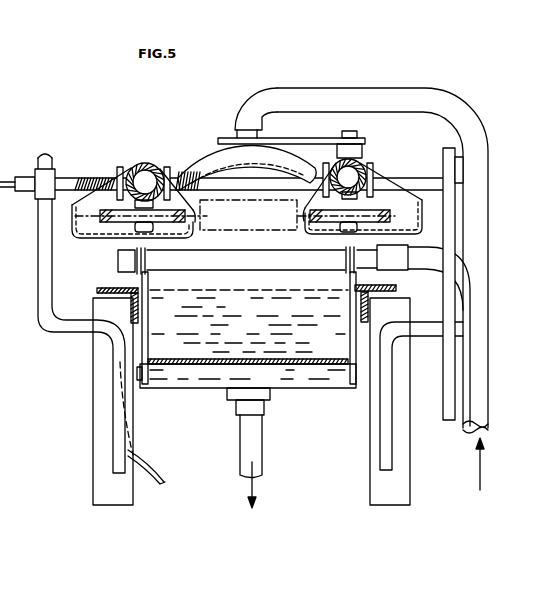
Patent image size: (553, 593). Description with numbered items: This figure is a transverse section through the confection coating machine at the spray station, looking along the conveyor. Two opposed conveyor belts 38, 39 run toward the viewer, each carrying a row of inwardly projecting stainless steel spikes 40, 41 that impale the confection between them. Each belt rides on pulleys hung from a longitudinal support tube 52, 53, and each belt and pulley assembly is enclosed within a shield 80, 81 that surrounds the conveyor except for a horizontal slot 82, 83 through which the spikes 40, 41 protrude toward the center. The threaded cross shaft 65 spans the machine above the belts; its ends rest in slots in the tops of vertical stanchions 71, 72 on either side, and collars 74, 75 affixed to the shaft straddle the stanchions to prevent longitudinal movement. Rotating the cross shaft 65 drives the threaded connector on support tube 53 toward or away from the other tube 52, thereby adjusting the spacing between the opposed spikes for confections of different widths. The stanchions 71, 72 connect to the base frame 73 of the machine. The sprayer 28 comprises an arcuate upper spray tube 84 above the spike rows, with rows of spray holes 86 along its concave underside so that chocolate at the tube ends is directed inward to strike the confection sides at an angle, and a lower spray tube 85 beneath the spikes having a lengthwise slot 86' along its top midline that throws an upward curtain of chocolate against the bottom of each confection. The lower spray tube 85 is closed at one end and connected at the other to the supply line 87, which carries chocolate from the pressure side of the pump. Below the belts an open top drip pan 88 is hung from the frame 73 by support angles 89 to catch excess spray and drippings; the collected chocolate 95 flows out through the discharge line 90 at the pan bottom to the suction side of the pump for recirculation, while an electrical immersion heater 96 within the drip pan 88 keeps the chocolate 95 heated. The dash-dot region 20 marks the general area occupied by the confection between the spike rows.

The dash-dot reference frame 20 is at (233, 224).
The sprayer 28 is at (313, 152).
The belt 38 is at (390, 216).
The belt 39 is at (103, 217).
The spikes 40 is at (297, 216).
The spikes 41 is at (205, 217).
The support tube 52 is at (357, 196).
The support tube 53 is at (134, 203).
The cross shaft 65 is at (72, 180).
The stanchion 71 is at (43, 223).
The stanchion 72 is at (452, 213).
The base frame 73 is at (100, 370).
The collar 74 is at (450, 150).
The collar 75 is at (48, 156).
The shield 80 is at (370, 166).
The shield 81 is at (115, 177).
The horizontal slot 82 is at (304, 221).
The horizontal slot 83 is at (195, 223).
The upper spray tube 84 is at (212, 157).
The lower spray tube 85 is at (178, 269).
The spray holes 86 is at (247, 166).
The slot 86' is at (263, 241).
The supply line 87 is at (475, 142).
The drip pan 88 is at (213, 364).
The support angles 89 is at (118, 287).
The discharge line 90 is at (256, 402).
The chocolate 95 is at (268, 341).
The emersion heater 96 is at (323, 373).